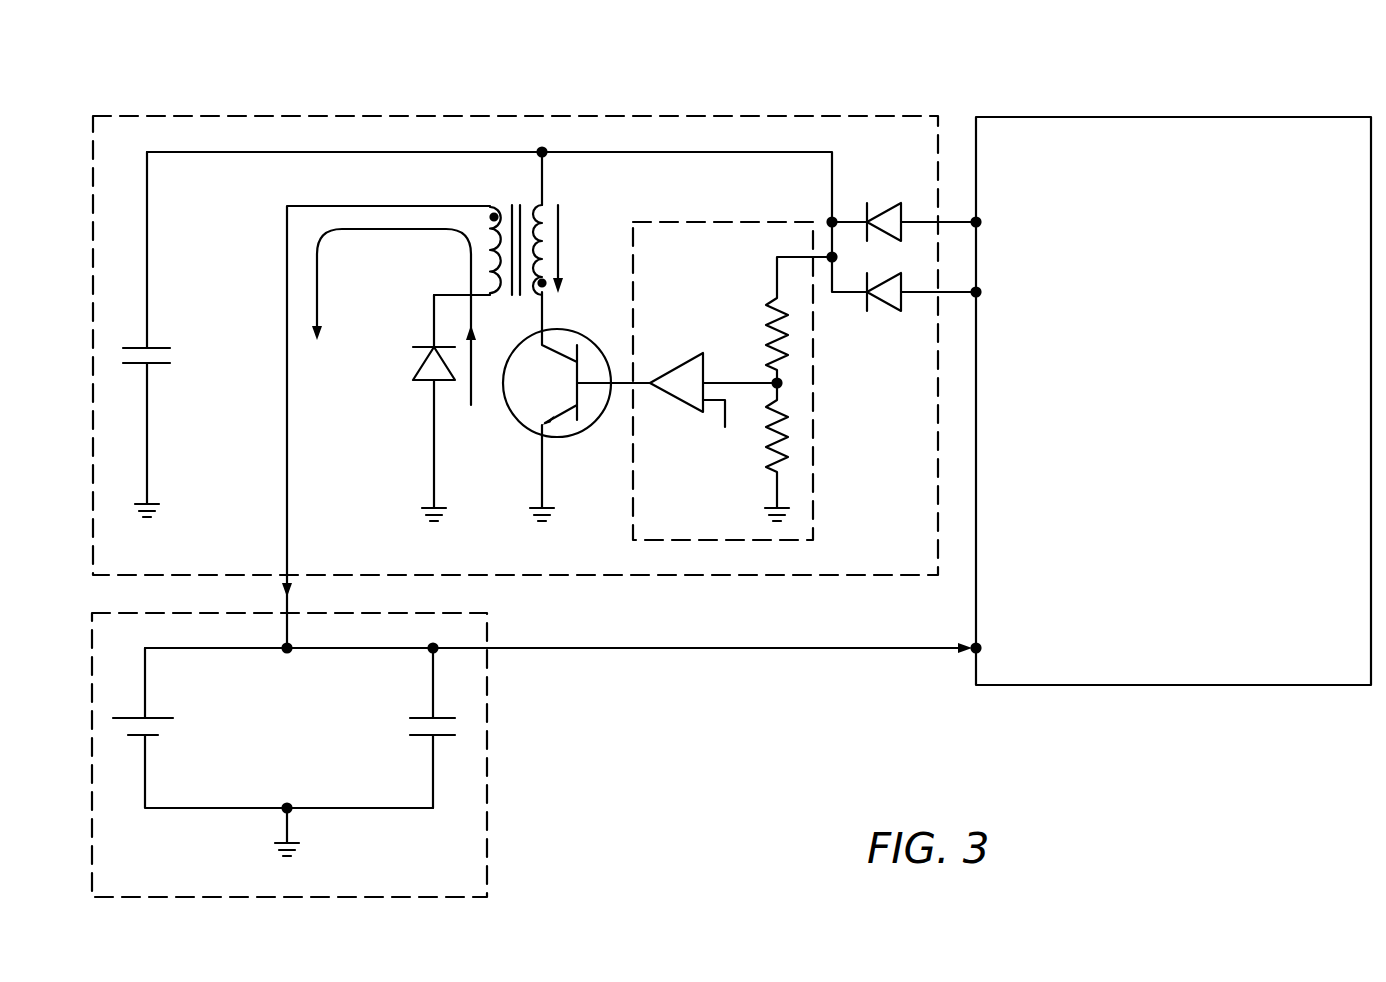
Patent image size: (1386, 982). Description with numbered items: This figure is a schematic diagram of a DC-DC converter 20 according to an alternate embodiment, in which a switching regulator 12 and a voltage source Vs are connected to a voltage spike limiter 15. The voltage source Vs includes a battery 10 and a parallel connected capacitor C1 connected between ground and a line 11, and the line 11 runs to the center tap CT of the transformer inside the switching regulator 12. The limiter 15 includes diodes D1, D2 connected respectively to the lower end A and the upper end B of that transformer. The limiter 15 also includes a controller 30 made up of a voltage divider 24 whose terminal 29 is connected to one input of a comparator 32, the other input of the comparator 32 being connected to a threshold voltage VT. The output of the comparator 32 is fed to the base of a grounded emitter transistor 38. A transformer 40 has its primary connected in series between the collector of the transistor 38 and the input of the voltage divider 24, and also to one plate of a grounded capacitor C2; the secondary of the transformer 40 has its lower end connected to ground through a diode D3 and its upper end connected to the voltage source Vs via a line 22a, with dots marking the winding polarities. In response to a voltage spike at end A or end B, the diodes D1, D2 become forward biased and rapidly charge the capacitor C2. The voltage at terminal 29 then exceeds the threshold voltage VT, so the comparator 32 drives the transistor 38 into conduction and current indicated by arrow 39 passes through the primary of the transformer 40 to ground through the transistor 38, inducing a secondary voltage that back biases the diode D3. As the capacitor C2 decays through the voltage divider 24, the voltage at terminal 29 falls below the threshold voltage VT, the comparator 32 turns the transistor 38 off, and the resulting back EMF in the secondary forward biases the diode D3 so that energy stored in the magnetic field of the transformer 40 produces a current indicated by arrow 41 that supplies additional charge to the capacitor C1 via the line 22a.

The DC-DC converter 20 is at (603, 56).
The voltage spike limiter 15 is at (287, 115).
The switching regulator 12 is at (1112, 117).
The transformer 40 is at (515, 198).
The current arrow 39 is at (570, 213).
The controller 30 is at (690, 222).
The voltage divider 24 is at (762, 312).
The grounded emitter transistor 38 is at (585, 337).
The terminal 29 is at (782, 382).
The comparator 32 is at (677, 400).
The current arrow 41 is at (320, 270).
The line 22a is at (293, 593).
The battery 10 is at (167, 728).
The line 11 is at (625, 649).
The capacitor C1 is at (405, 727).
The grounded capacitor C2 is at (167, 357).
The diode D1 is at (872, 308).
The diode D2 is at (875, 203).
The diode D3 is at (418, 370).
The threshold voltage VT is at (722, 431).
The lower end A is at (973, 294).
The upper end B is at (973, 220).
The center tap CT is at (973, 652).
The voltage source Vs is at (487, 800).